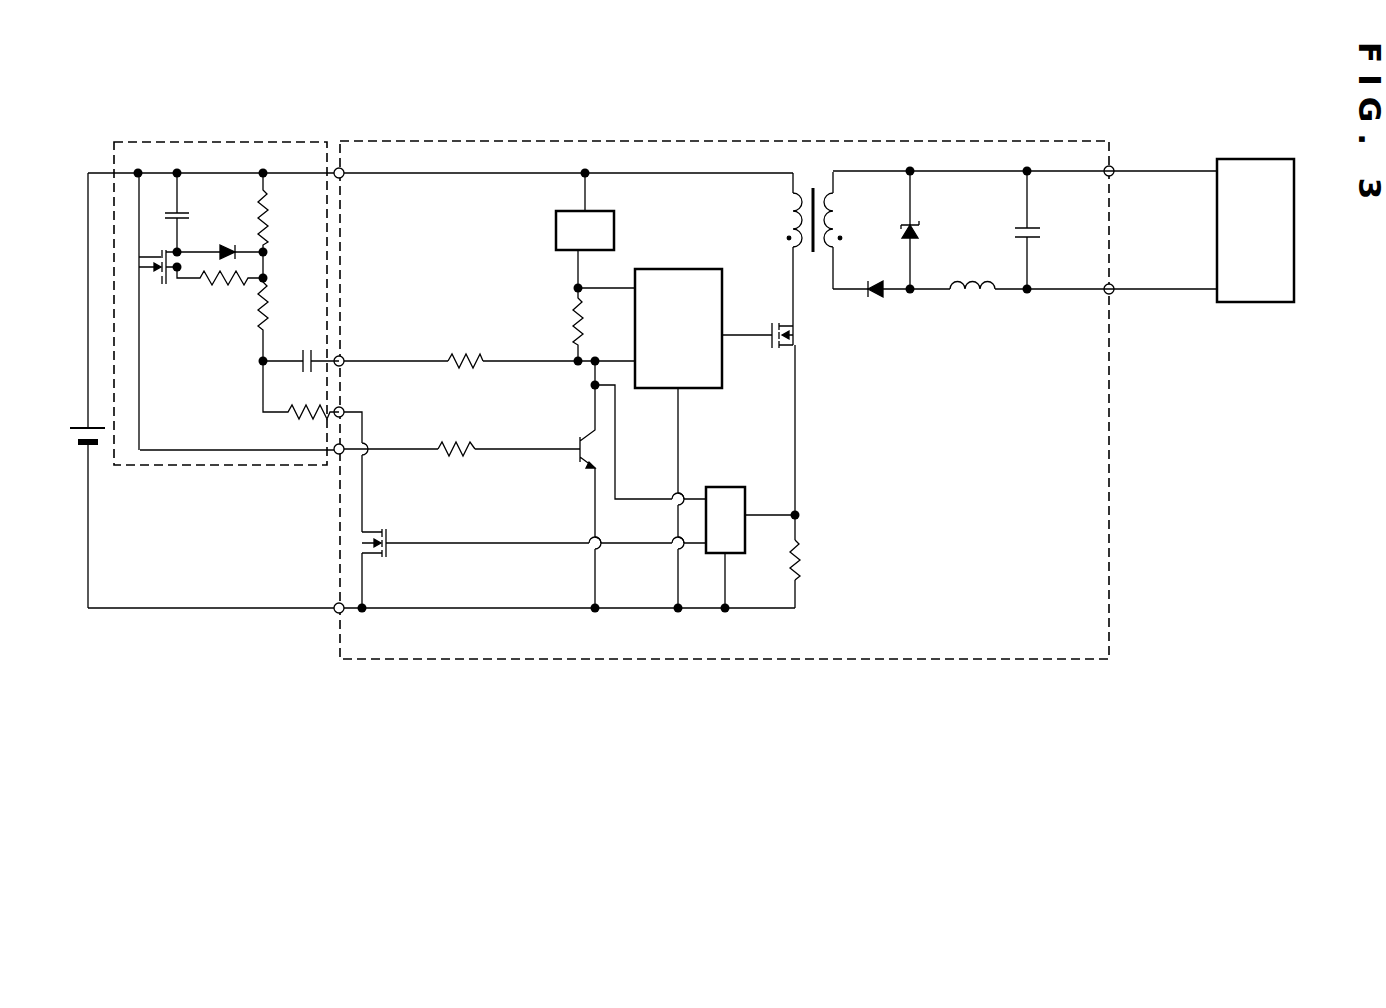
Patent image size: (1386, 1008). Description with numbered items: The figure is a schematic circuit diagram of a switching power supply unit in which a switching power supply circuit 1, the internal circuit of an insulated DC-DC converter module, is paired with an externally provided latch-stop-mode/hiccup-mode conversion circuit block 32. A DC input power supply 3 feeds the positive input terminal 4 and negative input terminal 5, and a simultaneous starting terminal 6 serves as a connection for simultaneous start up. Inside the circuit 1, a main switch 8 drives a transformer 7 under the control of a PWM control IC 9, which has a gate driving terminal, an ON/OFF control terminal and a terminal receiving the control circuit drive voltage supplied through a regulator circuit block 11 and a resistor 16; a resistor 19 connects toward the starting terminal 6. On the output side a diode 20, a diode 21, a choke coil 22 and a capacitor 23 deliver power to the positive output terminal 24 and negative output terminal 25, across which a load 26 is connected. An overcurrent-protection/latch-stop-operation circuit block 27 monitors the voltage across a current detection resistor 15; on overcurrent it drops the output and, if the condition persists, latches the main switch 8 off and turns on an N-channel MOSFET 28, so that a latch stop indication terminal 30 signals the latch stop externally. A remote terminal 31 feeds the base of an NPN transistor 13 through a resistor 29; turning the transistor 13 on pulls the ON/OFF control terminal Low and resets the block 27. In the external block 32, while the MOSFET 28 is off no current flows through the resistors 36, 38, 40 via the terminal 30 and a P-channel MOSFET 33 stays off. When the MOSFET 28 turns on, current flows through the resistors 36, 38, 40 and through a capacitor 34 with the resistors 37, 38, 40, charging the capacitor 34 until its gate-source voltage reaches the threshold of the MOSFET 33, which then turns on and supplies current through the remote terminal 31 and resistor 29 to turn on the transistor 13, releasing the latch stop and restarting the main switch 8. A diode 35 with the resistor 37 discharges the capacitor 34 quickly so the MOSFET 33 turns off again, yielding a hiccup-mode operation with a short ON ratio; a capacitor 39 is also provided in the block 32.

The switching power supply circuit 1 is at (625, 141).
The DC input power supply 3 is at (76, 442).
The positive input terminal 4 is at (344, 178).
The negative input terminal 5 is at (343, 613).
The simultaneous starting terminal 6 is at (344, 357).
The transformer 7 is at (810, 192).
The main switch 8 is at (800, 338).
The PWM control IC 9 is at (690, 268).
The regulator circuit block 11 is at (556, 232).
The NPN transistor 13 is at (575, 440).
The current detection resistor 15 is at (806, 560).
The resistor 16 is at (572, 318).
The resistor 19 is at (462, 352).
The diode 20 is at (876, 298).
The diode 21 is at (920, 230).
The choke coil 22 is at (974, 294).
The capacitor 23 is at (1046, 232).
The positive output terminal 24 is at (1114, 166).
The negative output terminal 25 is at (1114, 284).
The load 26 is at (1254, 174).
The overcurrent-protection/latch-stop-operation circuit block 27 is at (728, 486).
The N-channel MOSFET 28 is at (396, 530).
The resistor 29 is at (456, 442).
The latch stop indication terminal 30 is at (344, 409).
The remote terminal 31 is at (344, 454).
The latch-stop-mode/hiccup-mode conversion circuit block 32 is at (208, 141).
The P-channel MOSFET 33 is at (150, 288).
The capacitor 34 is at (186, 212).
The diode 35 is at (222, 244).
The resistor 36 is at (274, 226).
The resistor 37 is at (214, 288).
The resistor 38 is at (258, 314).
The capacitor 39 is at (308, 348).
The resistor 40 is at (296, 420).